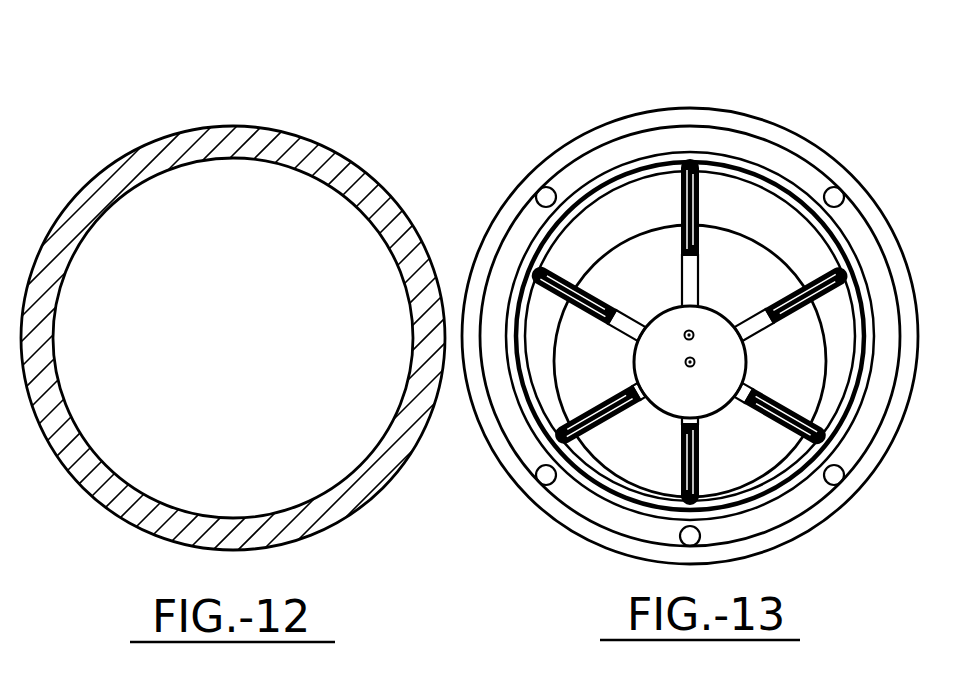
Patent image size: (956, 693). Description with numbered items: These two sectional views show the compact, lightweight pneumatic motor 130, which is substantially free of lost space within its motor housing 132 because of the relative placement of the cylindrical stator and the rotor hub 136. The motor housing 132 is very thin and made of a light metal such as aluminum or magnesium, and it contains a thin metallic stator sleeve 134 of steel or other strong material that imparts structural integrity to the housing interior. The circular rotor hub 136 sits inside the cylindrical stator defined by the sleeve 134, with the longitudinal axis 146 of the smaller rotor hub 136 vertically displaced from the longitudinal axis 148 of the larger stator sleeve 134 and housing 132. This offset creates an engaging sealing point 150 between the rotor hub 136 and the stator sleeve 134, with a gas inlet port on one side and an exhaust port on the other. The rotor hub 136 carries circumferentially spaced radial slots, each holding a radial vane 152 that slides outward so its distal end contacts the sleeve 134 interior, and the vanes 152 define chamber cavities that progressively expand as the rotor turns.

In FIG. 13, the pneumatic motor 130 is at (646, 110).
In FIG. 12, the motor housing 132 is at (300, 133).
In FIG. 13, the motor housing 132 is at (760, 118).
In FIG. 13, the cylindrical stator sleeve 134 is at (605, 193).
In FIG. 13, the rotor hub 136 is at (588, 264).
In FIG. 13, the longitudinal axis of the rotor hub 146 is at (695, 362).
In FIG. 13, the longitudinal axis of the stator sleeve 148 is at (692, 333).
In FIG. 13, the sealing point 150 is at (692, 505).
In FIG. 13, the radial vane 152 is at (697, 188).